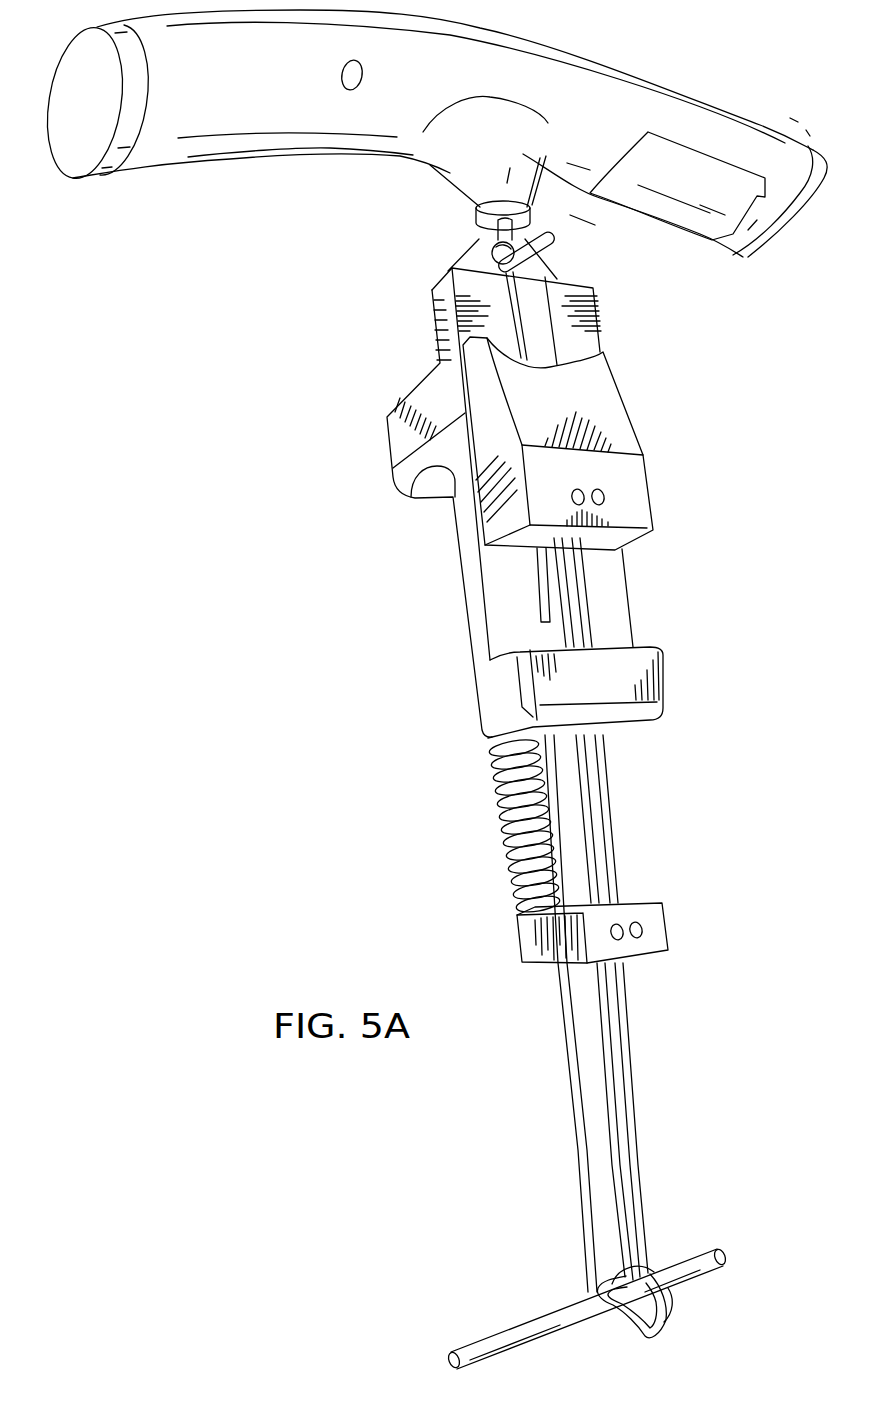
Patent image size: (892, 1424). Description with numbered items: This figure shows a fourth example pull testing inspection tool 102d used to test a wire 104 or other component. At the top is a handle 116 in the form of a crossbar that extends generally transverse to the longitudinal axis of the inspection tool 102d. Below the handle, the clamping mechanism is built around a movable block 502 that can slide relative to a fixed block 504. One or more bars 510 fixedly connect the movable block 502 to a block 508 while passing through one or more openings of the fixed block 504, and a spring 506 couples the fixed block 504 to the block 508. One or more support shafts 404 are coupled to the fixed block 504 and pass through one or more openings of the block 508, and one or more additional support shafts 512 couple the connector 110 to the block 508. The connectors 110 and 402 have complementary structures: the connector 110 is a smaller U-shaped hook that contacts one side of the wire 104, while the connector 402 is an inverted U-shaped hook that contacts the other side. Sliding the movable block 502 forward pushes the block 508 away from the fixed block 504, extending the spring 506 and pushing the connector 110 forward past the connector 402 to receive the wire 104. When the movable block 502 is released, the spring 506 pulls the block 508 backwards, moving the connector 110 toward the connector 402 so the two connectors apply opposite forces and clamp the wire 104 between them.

The handle 116 is at (655, 73).
The pull testing inspection tool 102d is at (457, 1186).
The fixed block 504 is at (390, 450).
The movable block 502 is at (653, 493).
The bars 510 is at (590, 594).
The spring 506 is at (500, 811).
The block 508 is at (518, 937).
The support shafts 404 is at (568, 1066).
The additional support shafts 512 is at (630, 959).
The connector 402 is at (660, 1337).
The connector 110 is at (668, 1313).
The wire 104 is at (532, 1318).